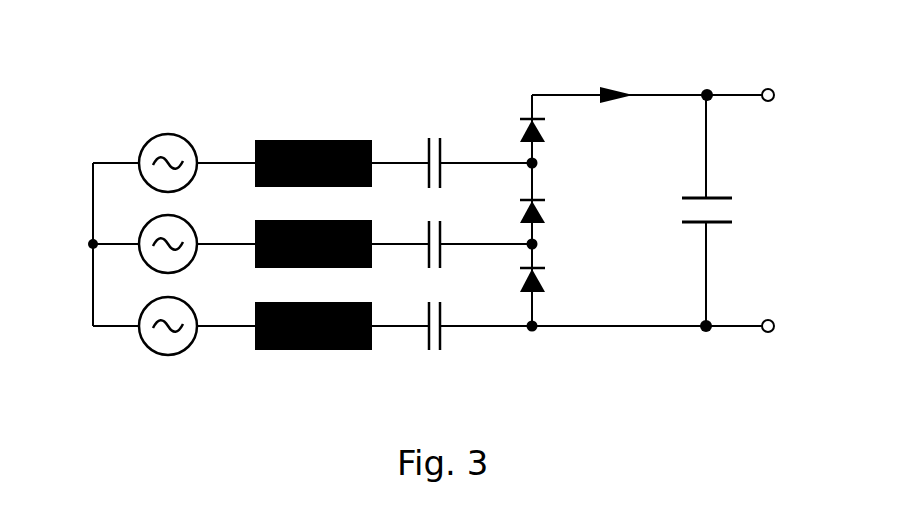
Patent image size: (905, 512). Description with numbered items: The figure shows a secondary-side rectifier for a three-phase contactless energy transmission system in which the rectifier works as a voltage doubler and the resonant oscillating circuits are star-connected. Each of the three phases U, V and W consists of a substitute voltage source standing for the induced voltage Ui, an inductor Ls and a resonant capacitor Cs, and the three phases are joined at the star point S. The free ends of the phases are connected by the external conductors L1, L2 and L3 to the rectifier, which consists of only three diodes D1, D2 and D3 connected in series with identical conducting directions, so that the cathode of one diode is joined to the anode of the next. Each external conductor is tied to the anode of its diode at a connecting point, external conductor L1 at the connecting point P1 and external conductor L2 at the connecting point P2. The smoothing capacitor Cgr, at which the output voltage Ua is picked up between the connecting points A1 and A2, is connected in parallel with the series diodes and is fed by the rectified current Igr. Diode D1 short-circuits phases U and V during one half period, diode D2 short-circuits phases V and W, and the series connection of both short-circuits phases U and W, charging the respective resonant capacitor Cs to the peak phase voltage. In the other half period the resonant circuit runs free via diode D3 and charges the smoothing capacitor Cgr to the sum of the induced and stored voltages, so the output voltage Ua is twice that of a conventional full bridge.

The star point S is at (72, 244).
The induced voltage Ui is at (192, 123).
The phase W is at (234, 143).
The phase V is at (233, 223).
The phase U is at (232, 305).
The inductor Ls is at (342, 245).
The resonant capacitor Cs is at (469, 245).
The external conductor L1 is at (480, 328).
The external conductor L2 is at (450, 248).
The external conductor L3 is at (460, 160).
The diode D1 is at (509, 285).
The diode D2 is at (509, 203).
The diode D3 is at (510, 129).
The connecting point P1 is at (534, 331).
The connecting point P2 is at (537, 242).
The rectified current Igr is at (647, 75).
The connecting point A1 is at (706, 332).
The connecting point A2 is at (707, 89).
The smoothing capacitor Cgr is at (675, 210).
The output voltage Ua is at (775, 117).